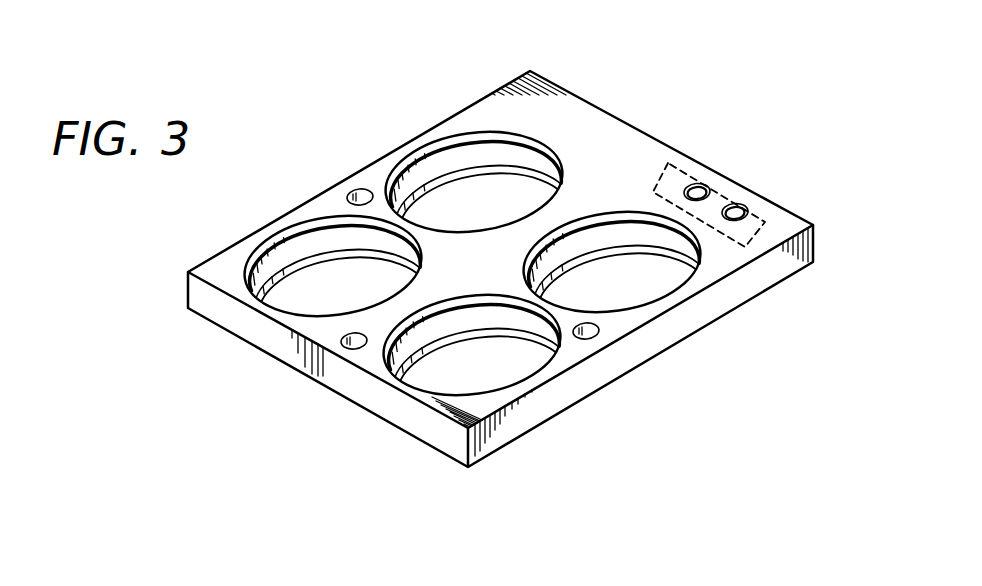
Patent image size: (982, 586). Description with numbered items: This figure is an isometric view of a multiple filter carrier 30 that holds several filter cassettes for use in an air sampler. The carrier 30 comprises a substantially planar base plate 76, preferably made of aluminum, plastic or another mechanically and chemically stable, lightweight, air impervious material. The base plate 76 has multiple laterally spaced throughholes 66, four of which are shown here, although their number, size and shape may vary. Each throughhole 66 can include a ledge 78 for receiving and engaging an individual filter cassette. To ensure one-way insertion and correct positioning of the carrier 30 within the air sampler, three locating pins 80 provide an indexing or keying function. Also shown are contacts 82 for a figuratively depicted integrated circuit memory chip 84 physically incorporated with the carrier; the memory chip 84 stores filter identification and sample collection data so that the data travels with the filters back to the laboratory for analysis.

The multiple filter carrier 30 is at (484, 269).
The throughhole 66 is at (296, 259).
The base plate 76 is at (533, 408).
The ledge 78 is at (280, 268).
The locating pin 80 is at (599, 331).
The contacts 82 is at (702, 191).
The integrated circuit memory chip 84 is at (682, 160).